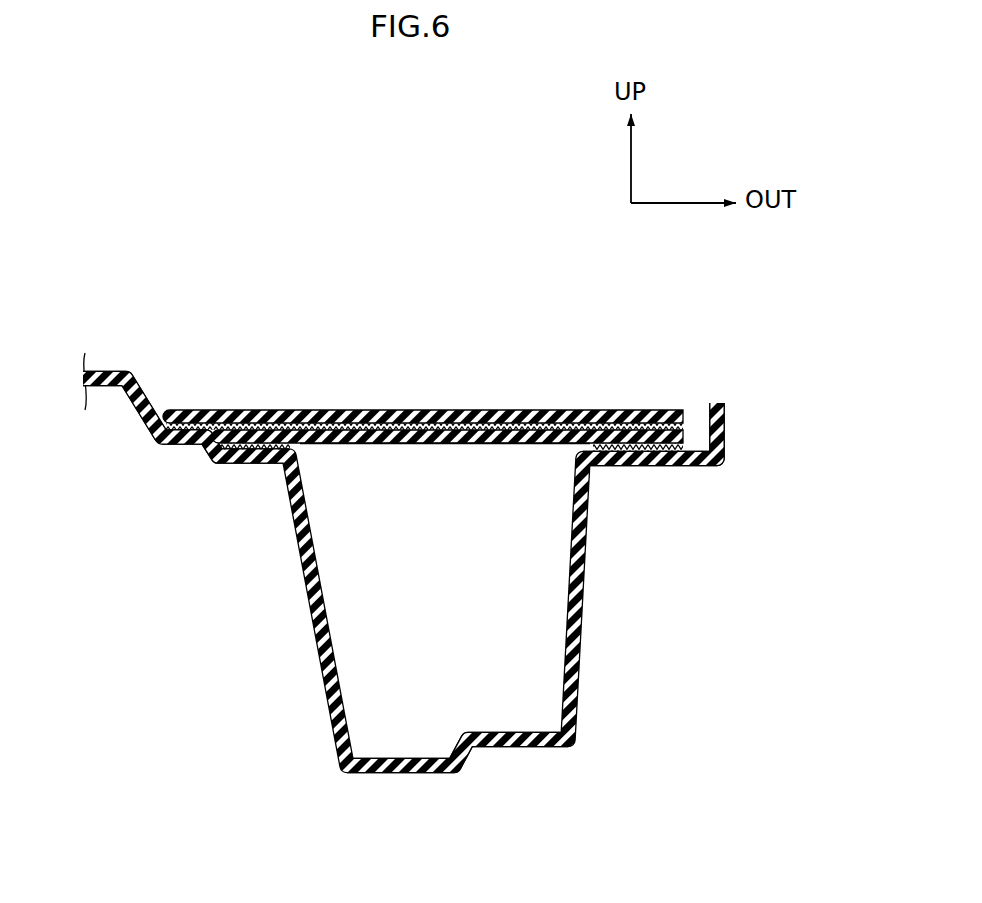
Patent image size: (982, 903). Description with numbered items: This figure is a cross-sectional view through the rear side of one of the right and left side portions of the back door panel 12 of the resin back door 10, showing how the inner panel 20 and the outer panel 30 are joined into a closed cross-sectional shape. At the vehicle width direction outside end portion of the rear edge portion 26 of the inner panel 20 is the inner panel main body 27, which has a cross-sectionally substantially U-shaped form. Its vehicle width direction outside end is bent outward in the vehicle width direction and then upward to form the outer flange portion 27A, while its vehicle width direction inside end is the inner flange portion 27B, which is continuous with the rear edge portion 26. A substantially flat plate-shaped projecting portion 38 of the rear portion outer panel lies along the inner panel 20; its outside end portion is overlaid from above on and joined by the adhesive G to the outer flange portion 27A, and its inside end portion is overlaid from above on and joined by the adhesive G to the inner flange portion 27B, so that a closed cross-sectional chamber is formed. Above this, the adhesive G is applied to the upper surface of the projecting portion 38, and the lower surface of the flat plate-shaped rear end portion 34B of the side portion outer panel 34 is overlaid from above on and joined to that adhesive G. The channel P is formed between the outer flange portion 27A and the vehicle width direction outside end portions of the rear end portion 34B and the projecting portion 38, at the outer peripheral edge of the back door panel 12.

The resin back door 10 is at (428, 381).
The back door panel 12 is at (428, 413).
The inner panel 20 is at (452, 613).
The rear edge portion 26 is at (105, 389).
The inner panel main body 27 is at (400, 776).
The outer flange portion 27A is at (727, 425).
The inner flange portion 27B is at (253, 466).
The outer panel 30 is at (410, 408).
The rear end portion 34B is at (447, 359).
The side portion outer panel 34 is at (530, 410).
The projecting portion 38 is at (445, 498).
The adhesive G is at (368, 410).
The channel P is at (696, 432).